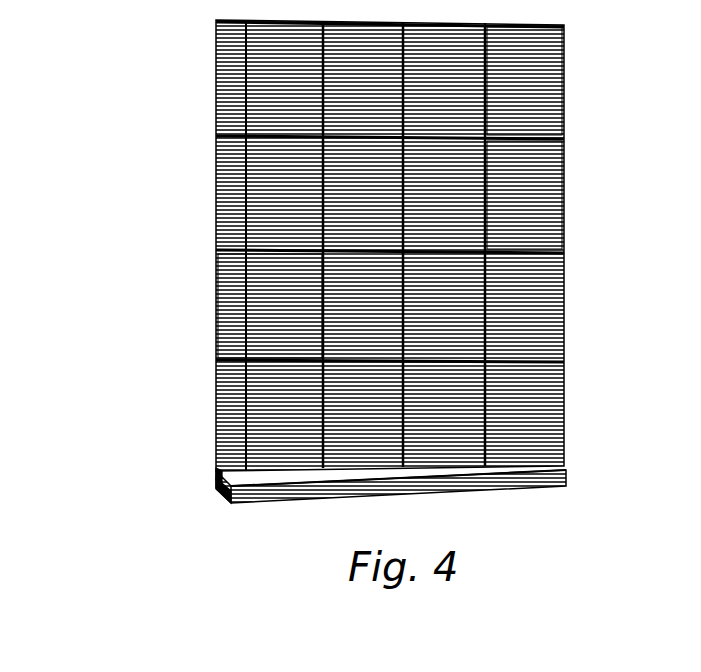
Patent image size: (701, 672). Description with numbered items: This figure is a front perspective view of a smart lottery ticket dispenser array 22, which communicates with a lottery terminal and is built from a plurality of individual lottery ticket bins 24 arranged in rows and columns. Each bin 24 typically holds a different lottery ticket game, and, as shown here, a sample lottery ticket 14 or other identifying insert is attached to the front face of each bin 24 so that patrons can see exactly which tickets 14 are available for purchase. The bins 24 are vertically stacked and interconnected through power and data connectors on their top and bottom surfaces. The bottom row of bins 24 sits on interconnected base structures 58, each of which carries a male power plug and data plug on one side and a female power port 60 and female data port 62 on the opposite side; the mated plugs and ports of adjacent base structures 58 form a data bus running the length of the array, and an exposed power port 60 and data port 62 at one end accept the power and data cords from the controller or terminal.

The lottery tickets 14 is at (522, 45).
The lottery ticket dispenser array 22 is at (112, 103).
The lottery ticket bin 24 is at (222, 295).
The base structure 58 is at (513, 472).
The female power port 60 is at (222, 483).
The female data port 62 is at (208, 472).